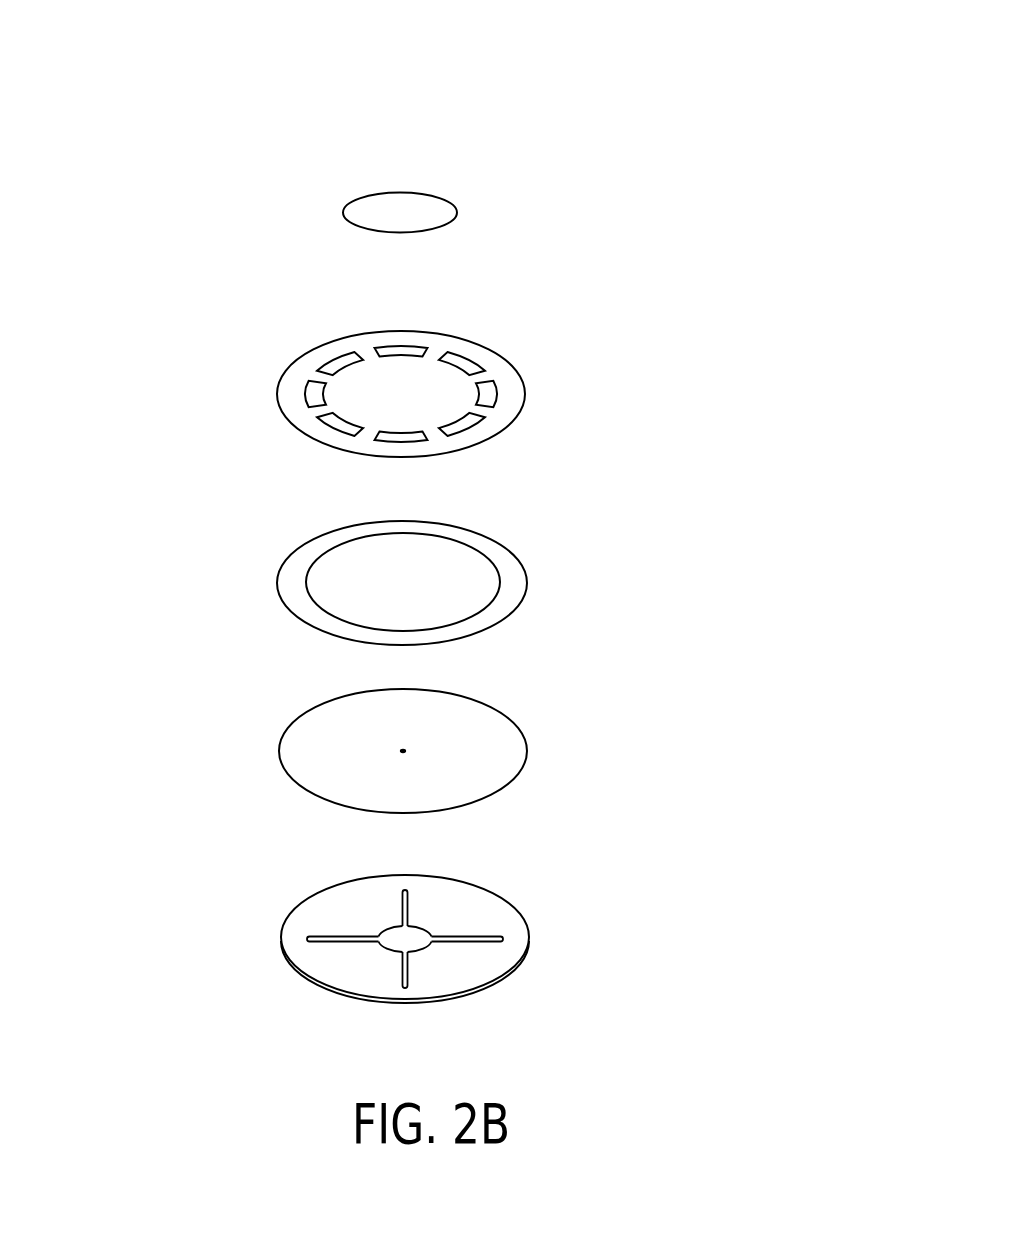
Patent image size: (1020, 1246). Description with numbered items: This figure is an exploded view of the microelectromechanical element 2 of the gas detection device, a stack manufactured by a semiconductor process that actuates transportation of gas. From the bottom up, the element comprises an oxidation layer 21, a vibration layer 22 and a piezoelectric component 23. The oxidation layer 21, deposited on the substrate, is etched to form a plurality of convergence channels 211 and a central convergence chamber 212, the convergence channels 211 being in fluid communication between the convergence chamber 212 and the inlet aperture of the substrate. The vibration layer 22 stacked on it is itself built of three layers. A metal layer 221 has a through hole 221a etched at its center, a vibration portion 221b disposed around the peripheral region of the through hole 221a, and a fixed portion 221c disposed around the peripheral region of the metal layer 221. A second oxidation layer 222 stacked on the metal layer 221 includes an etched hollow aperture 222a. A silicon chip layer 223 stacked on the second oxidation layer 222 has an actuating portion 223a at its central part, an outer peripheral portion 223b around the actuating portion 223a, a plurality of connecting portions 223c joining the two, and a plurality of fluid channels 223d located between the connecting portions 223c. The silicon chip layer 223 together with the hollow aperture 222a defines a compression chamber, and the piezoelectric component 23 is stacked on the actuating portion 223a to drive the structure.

The microelectromechanical element 2 is at (725, 44).
The piezoelectric component 23 is at (475, 189).
The vibration layer 22 is at (722, 287).
The silicon chip layer 223 is at (527, 340).
The actuating portion 223a is at (383, 407).
The outer peripheral portion 223b is at (380, 448).
The connecting portions 223c is at (368, 352).
The fluid channels 223d is at (336, 366).
The second oxidation layer 222 is at (527, 533).
The hollow aperture 222a is at (362, 598).
The metal layer 221 is at (533, 708).
The through hole 221a is at (401, 751).
The vibration portion 221b is at (387, 719).
The fixed portion 221c is at (292, 780).
The oxidation layer 21 is at (548, 885).
The convergence channels 211 is at (472, 937).
The convergence chamber 212 is at (403, 942).